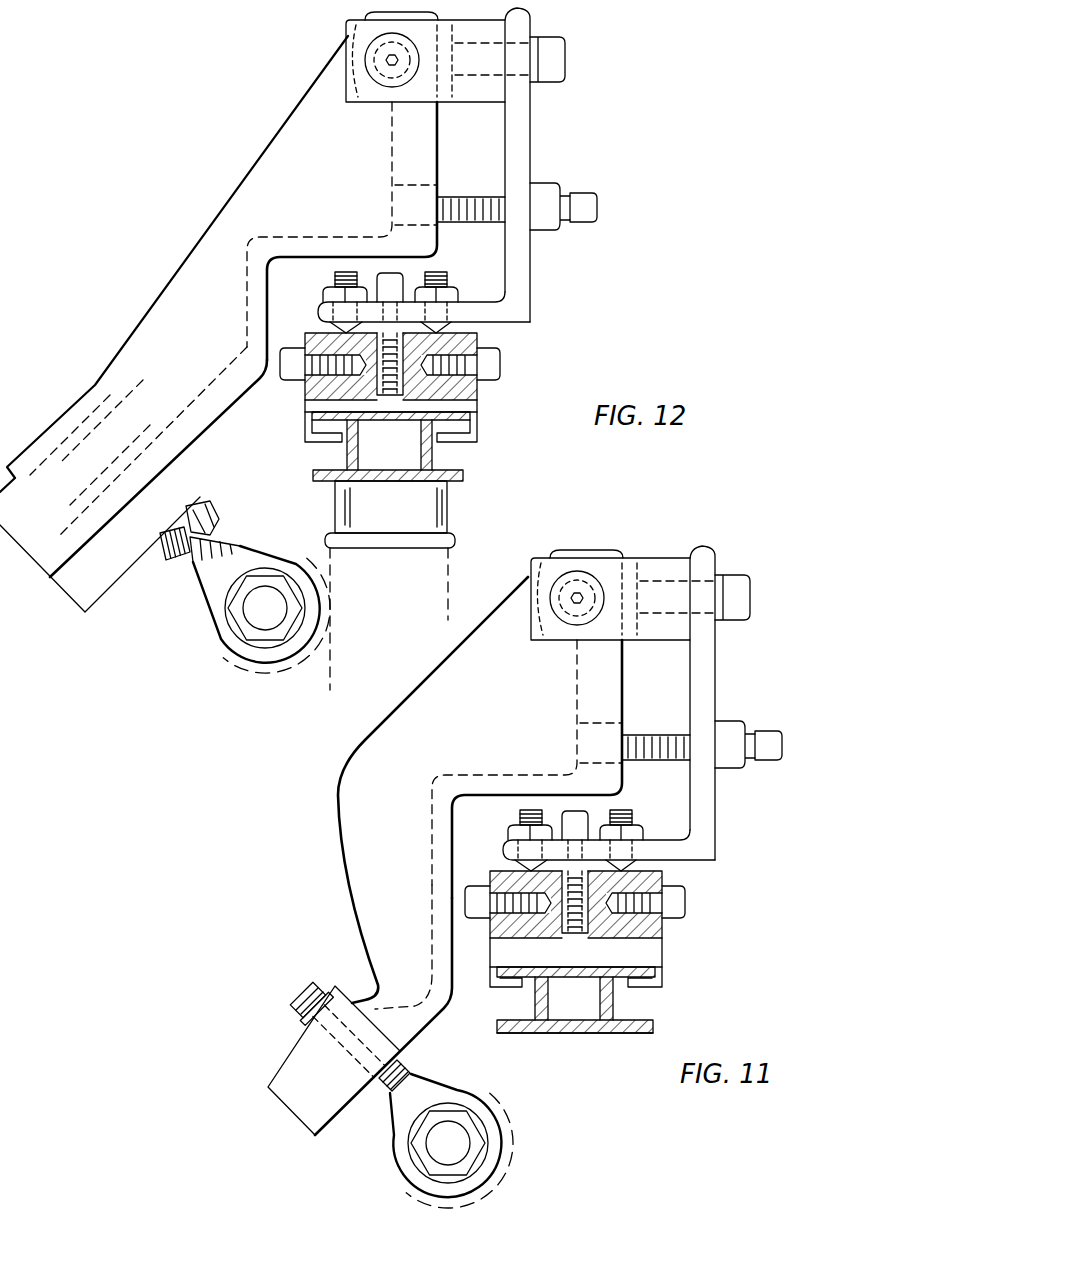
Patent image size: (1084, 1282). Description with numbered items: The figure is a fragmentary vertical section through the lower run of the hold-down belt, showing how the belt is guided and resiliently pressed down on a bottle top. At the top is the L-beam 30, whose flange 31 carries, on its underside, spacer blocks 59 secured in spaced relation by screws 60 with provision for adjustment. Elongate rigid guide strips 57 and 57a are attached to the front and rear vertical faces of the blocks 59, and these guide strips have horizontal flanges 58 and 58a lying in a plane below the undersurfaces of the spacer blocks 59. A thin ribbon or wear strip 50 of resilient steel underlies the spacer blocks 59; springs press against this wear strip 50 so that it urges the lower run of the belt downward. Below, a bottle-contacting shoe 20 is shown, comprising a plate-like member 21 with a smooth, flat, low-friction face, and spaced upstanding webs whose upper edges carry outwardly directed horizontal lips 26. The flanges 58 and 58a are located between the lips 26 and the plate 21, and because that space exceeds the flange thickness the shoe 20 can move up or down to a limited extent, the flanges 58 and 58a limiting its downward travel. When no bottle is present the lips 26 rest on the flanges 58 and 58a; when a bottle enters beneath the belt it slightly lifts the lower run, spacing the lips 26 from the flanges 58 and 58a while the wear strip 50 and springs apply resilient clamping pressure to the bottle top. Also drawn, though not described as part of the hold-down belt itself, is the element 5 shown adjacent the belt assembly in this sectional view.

In FIG. 12, the rod end 5 is at (243, 664).
In FIG. 11, the rod end 5 is at (392, 1173).
In FIG. 11, the shoe 20 is at (578, 1047).
In FIG. 12, the plate-like member 21 is at (458, 482).
In FIG. 11, the plate-like member 21 is at (640, 1036).
In FIG. 12, the lip 26 is at (312, 420).
In FIG. 11, the lip 26 is at (508, 978).
In FIG. 12, the L-beam 30 is at (512, 164).
In FIG. 11, the L-beam 30 is at (681, 703).
In FIG. 12, the flange 31 is at (461, 306).
In FIG. 11, the flange 31 is at (609, 823).
In FIG. 12, the wear strip 50 is at (399, 420).
In FIG. 11, the wear strip 50 is at (590, 975).
In FIG. 12, the guide strip 57 is at (305, 400).
In FIG. 11, the guide strip 57 is at (506, 914).
In FIG. 12, the guide strip 57a is at (478, 393).
In FIG. 11, the guide strip 57a is at (668, 911).
In FIG. 12, the horizontal flange 58 is at (322, 446).
In FIG. 11, the horizontal flange 58 is at (517, 987).
In FIG. 12, the horizontal flange 58a is at (470, 448).
In FIG. 11, the horizontal flange 58a is at (635, 990).
In FIG. 12, the spacer block 59 is at (473, 340).
In FIG. 11, the spacer block 59 is at (606, 894).
In FIG. 12, the screw 60 is at (384, 270).
In FIG. 11, the screw 60 is at (553, 839).